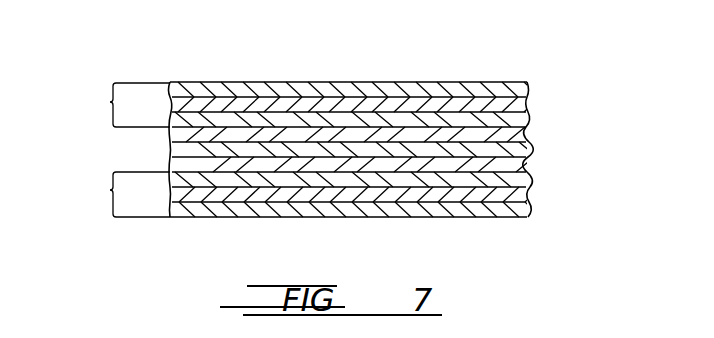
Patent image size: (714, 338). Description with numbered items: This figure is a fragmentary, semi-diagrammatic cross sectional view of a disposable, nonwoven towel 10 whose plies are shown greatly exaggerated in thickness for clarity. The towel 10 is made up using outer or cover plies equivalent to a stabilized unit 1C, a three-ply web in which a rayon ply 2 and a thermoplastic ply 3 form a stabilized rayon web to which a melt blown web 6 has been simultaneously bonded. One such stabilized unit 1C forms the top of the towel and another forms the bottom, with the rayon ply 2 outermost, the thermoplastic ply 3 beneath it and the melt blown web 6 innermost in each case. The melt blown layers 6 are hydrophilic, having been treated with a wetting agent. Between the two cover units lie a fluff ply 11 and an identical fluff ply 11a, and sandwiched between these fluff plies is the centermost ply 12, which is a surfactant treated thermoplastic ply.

The disposable nonwoven towel 10 is at (389, 83).
The rayon ply 2 is at (527, 82).
The thermoplastic ply 3 is at (527, 97).
The melt blown web 6 is at (528, 120).
The fluff ply 11 is at (528, 134).
The centermost ply 12 is at (530, 149).
The fluff ply 11a is at (530, 165).
The stabilized unit 1C is at (304, 149).